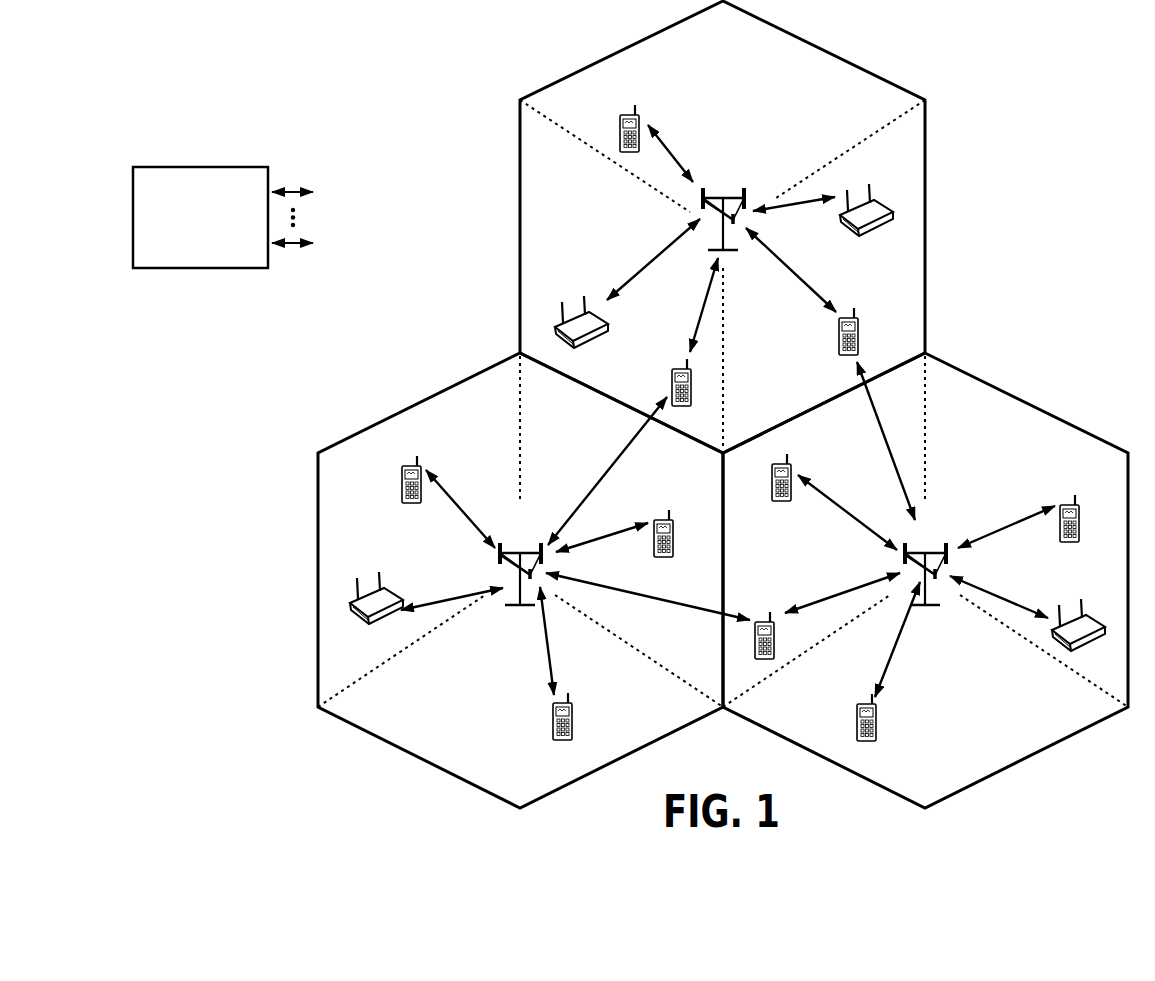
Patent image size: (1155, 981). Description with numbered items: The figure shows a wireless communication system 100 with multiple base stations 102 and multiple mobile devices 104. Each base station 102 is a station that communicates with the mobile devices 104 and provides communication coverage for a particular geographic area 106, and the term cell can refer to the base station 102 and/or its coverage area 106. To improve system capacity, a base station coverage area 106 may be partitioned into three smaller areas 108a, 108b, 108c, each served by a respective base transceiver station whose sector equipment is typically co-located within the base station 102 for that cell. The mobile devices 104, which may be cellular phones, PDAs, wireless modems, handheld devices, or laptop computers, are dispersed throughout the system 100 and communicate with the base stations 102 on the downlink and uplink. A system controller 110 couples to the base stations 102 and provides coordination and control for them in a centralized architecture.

The wireless communication system 100 is at (1066, 60).
The base station 102 is at (719, 194).
The mobile device 104 is at (619, 124).
The geographic area 106 is at (828, 46).
The smaller area 108a is at (722, 122).
The smaller area 108b is at (628, 313).
The smaller area 108c is at (792, 381).
The system controller 110 is at (196, 167).